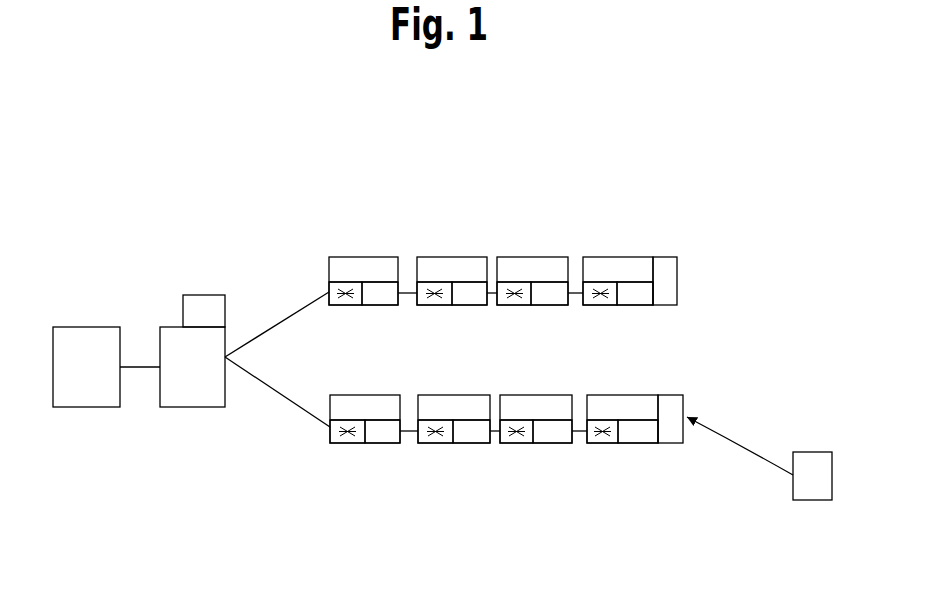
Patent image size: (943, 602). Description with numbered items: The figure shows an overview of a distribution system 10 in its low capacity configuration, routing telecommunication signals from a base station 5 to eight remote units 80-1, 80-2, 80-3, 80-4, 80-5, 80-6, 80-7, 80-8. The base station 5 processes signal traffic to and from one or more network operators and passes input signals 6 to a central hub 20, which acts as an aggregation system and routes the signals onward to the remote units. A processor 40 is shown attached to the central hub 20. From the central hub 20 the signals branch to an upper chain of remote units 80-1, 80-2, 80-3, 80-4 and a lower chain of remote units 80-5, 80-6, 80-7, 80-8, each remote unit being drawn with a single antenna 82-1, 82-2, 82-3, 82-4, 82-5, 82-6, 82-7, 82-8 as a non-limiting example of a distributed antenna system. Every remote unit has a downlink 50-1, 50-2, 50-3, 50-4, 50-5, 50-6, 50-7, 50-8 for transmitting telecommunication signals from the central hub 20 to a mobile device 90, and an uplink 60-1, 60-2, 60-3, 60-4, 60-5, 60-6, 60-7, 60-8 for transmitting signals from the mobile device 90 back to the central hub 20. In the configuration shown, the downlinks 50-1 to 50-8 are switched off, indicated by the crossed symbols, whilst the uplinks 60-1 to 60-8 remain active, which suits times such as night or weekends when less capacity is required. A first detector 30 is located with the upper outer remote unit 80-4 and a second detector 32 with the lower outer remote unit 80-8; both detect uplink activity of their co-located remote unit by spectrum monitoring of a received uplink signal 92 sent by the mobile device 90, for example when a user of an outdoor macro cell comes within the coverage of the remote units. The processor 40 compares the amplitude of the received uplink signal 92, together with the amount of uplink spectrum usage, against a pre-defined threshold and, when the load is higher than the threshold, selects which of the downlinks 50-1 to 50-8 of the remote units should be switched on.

The distribution system 10 is at (150, 228).
The base station 5 is at (78, 398).
The input signals 6 is at (145, 366).
The central hub 20 is at (192, 408).
The processor 40 is at (203, 295).
The first detector 30 is at (678, 264).
The second detector 32 is at (668, 408).
The remote unit 80-1 is at (338, 185).
The remote unit 80-2 is at (438, 180).
The remote unit 80-3 is at (520, 180).
The upper outer remote unit 80-4 is at (603, 180).
The remote unit 80-5 is at (345, 513).
The remote unit 80-6 is at (450, 515).
The remote unit 80-7 is at (538, 530).
The lower outer remote unit 80-8 is at (673, 520).
The antenna 82-1 is at (363, 268).
The antenna 82-2 is at (450, 268).
The antenna 82-3 is at (535, 268).
The antenna 82-4 is at (620, 268).
The antenna 82-5 is at (365, 408).
The antenna 82-6 is at (458, 408).
The antenna 82-7 is at (540, 408).
The antenna 82-8 is at (620, 408).
The downlink 50-1 is at (342, 293).
The downlink 50-2 is at (425, 293).
The downlink 50-3 is at (518, 305).
The downlink 50-4 is at (607, 295).
The downlink 50-5 is at (330, 443).
The downlink 50-6 is at (437, 435).
The downlink 50-7 is at (513, 435).
The downlink 50-8 is at (608, 435).
The uplink 60-1 is at (382, 298).
The uplink 60-2 is at (472, 302).
The uplink 60-3 is at (558, 305).
The uplink 60-4 is at (637, 295).
The uplink 60-5 is at (383, 435).
The uplink 60-6 is at (472, 447).
The uplink 60-7 is at (555, 435).
The uplink 60-8 is at (650, 445).
The mobile device 90 is at (812, 500).
The received uplink signal 92 is at (748, 445).